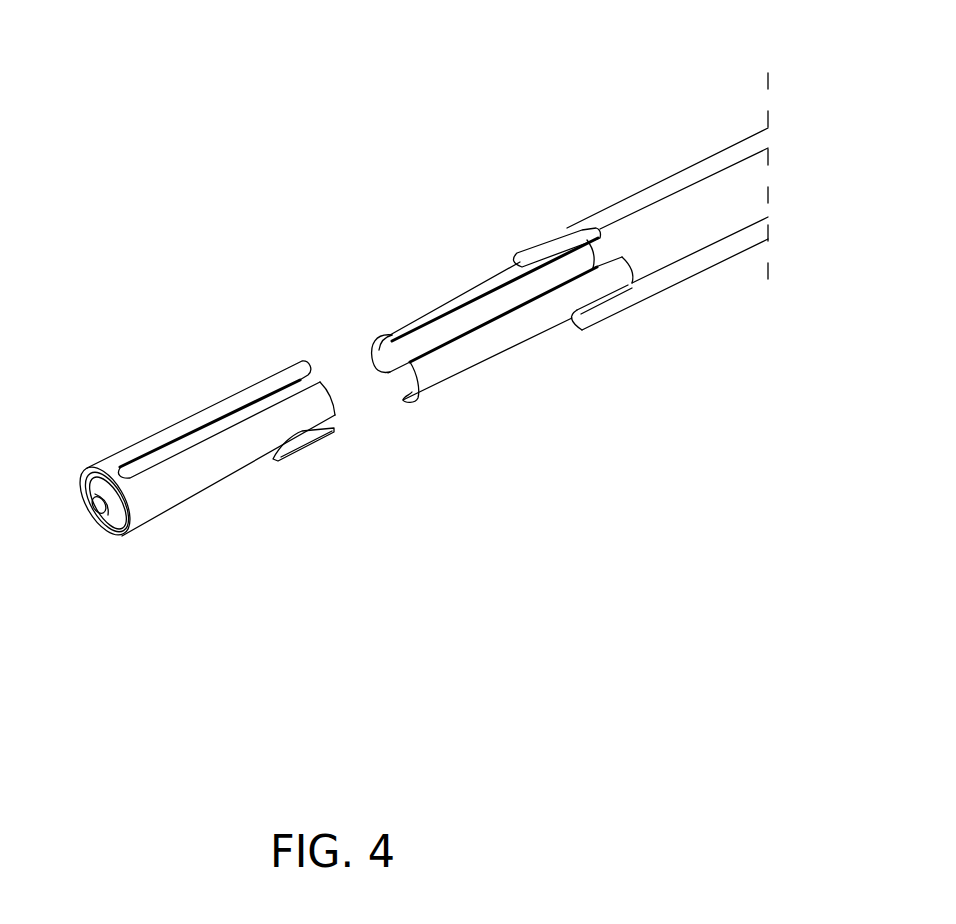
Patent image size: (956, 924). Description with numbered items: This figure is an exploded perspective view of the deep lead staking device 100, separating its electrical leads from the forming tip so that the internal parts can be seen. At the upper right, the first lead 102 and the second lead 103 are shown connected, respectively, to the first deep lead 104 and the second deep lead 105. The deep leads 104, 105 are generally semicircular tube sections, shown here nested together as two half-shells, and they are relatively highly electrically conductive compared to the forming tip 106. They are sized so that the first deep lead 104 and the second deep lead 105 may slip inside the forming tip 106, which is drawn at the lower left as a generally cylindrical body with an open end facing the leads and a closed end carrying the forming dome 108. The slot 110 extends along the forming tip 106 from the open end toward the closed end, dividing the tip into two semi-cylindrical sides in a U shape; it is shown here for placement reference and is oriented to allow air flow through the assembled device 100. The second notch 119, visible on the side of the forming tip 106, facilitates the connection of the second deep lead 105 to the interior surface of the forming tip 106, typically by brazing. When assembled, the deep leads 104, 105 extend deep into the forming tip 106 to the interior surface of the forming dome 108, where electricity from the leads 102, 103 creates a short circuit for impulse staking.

The deep lead staking device 100 is at (568, 78).
The first lead 102 is at (690, 173).
The second lead 103 is at (670, 285).
The first deep lead 104 is at (478, 290).
The second deep lead 105 is at (528, 323).
The forming tip 106 is at (197, 412).
The forming dome 108 is at (105, 528).
The slot 110 is at (240, 415).
The second notch 119 is at (307, 433).